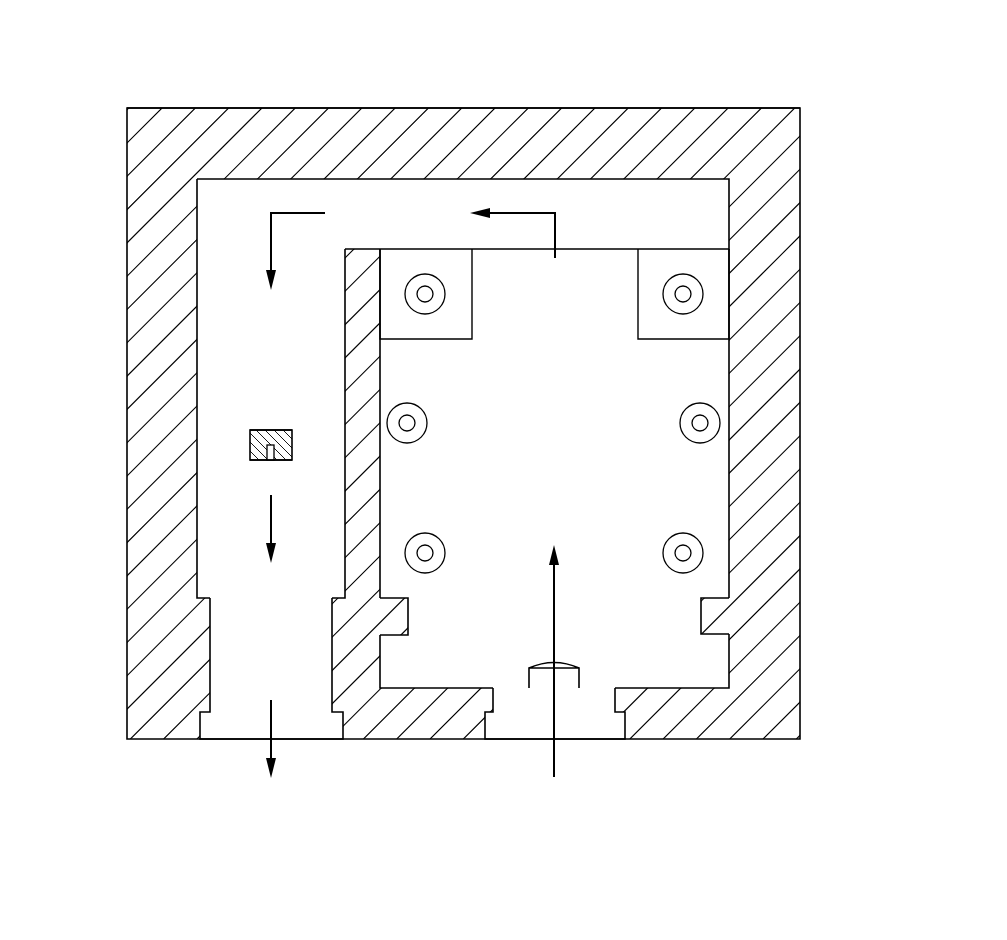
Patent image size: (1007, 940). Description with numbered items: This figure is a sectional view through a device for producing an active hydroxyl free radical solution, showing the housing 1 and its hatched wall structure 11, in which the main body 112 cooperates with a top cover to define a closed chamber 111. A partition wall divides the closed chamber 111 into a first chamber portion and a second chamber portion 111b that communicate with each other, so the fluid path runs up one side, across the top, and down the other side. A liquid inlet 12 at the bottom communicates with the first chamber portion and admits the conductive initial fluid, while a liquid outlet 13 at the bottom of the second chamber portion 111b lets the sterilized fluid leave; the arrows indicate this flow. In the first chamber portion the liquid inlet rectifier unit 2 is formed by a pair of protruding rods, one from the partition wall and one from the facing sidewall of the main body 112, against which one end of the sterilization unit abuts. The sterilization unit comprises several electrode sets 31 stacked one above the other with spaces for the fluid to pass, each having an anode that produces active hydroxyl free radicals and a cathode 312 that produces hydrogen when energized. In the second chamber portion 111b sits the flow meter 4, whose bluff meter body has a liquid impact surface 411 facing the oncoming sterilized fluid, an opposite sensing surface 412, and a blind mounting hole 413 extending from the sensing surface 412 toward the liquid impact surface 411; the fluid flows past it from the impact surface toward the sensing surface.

The housing 1 is at (365, 98).
The housing 11 is at (440, 108).
The main body 112 is at (515, 118).
The closed chamber 111 is at (663, 198).
The second chamber portion 111b is at (224, 313).
The electrode sets 31 is at (624, 346).
The cathode 312 is at (717, 325).
The liquid inlet rectifier unit 2 is at (718, 615).
The liquid outlet 13 is at (202, 718).
The liquid inlet 12 is at (487, 720).
The flow meter 4 is at (171, 433).
The liquid impact surface 411 is at (277, 430).
The mounting hole 413 is at (267, 455).
The sensing surface 412 is at (286, 460).